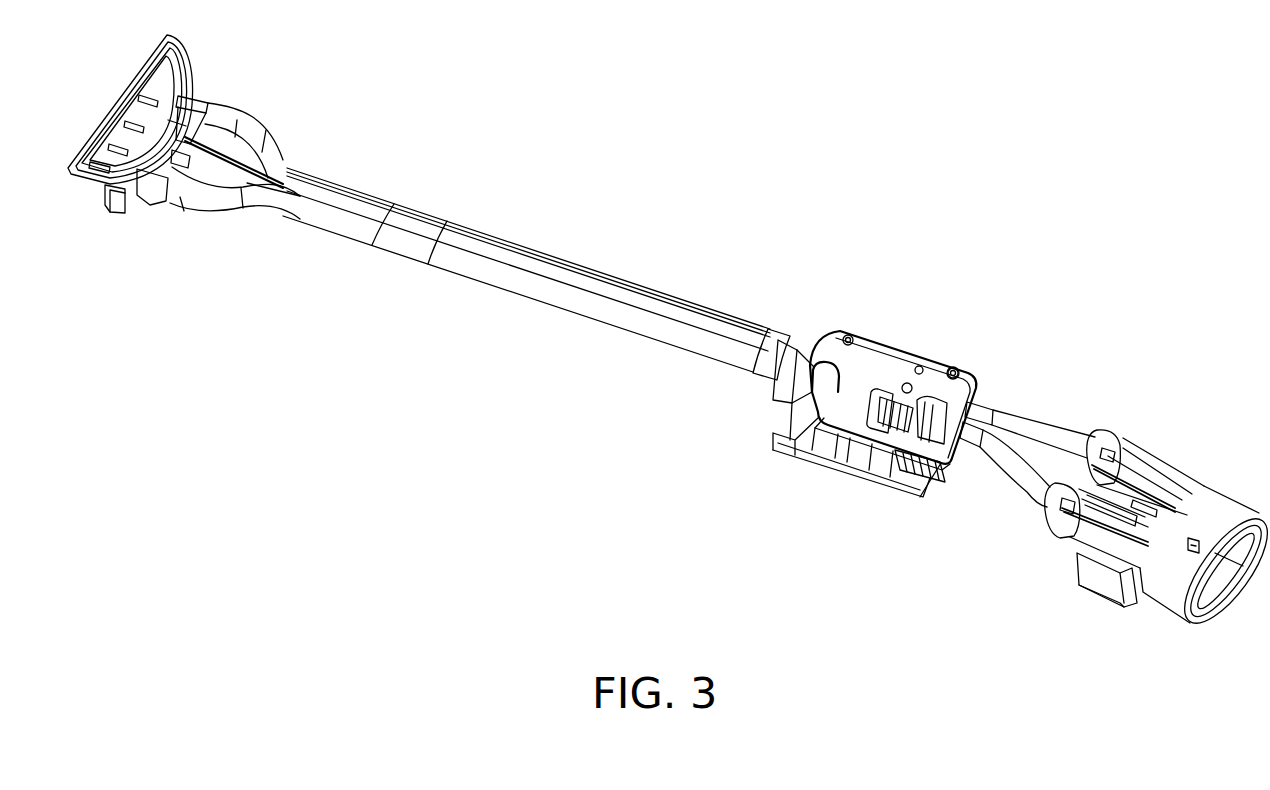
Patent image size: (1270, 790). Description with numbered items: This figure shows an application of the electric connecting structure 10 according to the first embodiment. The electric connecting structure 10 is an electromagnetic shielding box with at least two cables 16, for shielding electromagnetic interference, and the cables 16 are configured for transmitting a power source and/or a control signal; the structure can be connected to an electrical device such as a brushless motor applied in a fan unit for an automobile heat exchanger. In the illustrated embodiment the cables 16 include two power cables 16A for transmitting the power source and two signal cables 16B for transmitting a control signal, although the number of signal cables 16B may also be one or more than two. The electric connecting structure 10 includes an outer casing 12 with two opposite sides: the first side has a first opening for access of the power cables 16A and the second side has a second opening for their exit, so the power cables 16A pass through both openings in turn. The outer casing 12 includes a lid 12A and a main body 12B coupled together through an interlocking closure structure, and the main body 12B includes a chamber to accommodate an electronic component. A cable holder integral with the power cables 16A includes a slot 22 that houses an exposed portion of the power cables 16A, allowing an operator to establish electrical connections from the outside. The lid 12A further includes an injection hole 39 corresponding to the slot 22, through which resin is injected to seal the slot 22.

The electric connecting structure 10 is at (915, 328).
The outer casing 12 is at (783, 212).
The lid 12A is at (865, 371).
The main body 12B is at (775, 432).
The cables 16 is at (513, 241).
The power cables 16A is at (281, 171).
The signal cables 16B is at (211, 156).
The slot 22 is at (843, 440).
The injection hole 39 is at (954, 372).